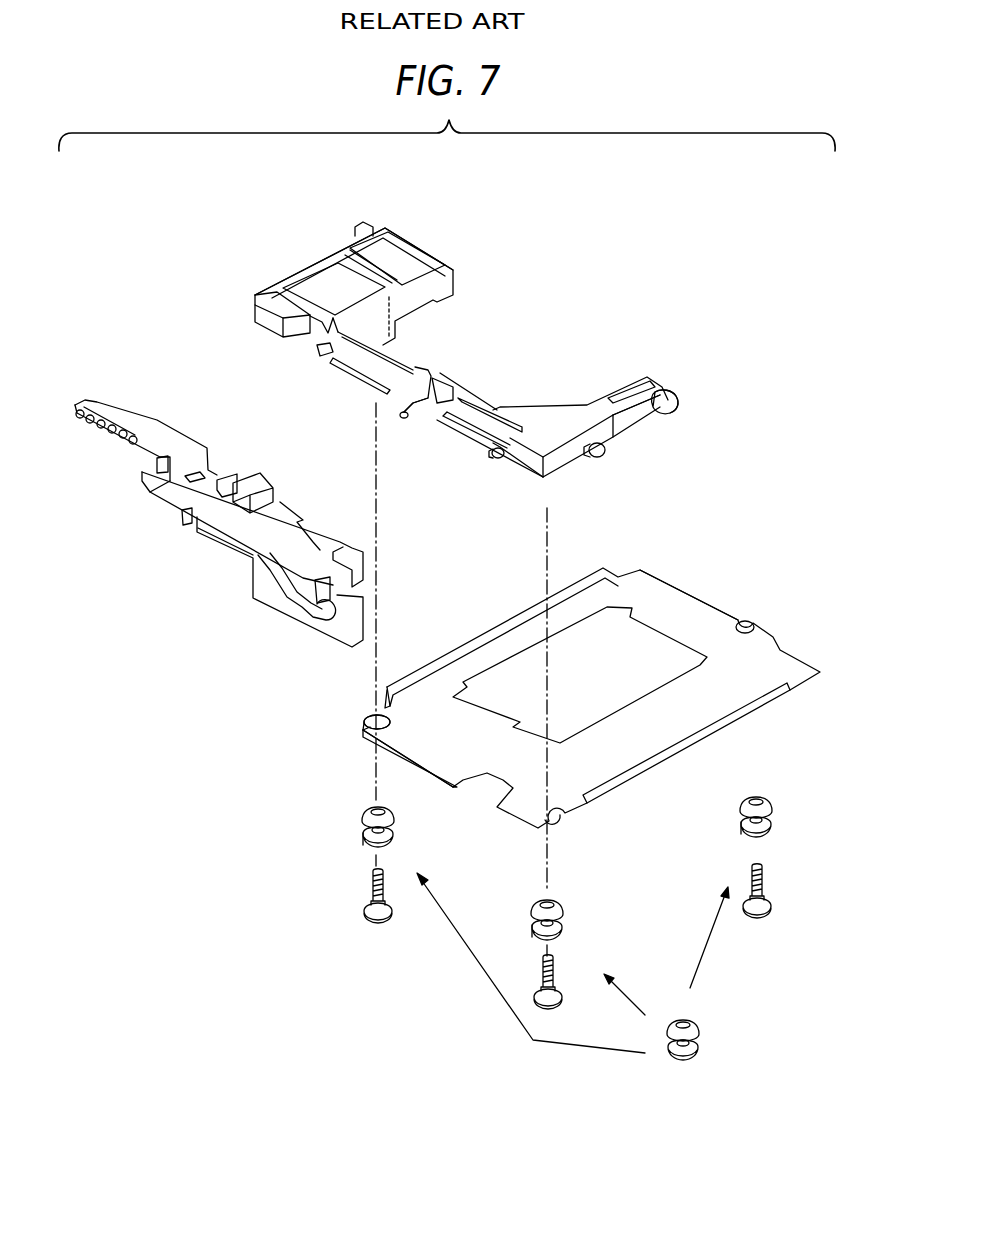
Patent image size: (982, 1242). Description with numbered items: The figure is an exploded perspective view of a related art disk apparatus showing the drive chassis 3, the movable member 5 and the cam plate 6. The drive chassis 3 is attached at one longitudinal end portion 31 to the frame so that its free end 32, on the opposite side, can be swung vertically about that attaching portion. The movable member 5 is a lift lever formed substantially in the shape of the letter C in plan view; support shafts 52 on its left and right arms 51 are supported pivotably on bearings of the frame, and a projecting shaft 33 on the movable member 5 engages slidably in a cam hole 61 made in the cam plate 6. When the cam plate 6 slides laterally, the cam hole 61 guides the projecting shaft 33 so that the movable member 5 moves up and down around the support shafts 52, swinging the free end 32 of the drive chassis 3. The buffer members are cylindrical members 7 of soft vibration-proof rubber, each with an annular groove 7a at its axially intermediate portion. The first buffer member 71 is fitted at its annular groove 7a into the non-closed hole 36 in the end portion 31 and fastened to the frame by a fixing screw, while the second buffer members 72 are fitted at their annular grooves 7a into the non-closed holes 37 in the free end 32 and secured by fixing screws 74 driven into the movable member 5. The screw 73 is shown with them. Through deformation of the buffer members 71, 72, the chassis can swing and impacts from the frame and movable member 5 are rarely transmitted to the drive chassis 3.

The drive chassis 3 is at (807, 688).
The longitudinal end portion 31 is at (685, 590).
The free end 32 is at (443, 782).
The projecting shaft 33 is at (423, 407).
The non-closed hole 36 is at (747, 619).
The non-closed holes 37 is at (368, 718).
The movable member 5 is at (525, 463).
The arms 51 is at (338, 245).
The support shafts 52 is at (368, 223).
The cam plate 6 is at (273, 597).
The cam hole 61 is at (317, 603).
The cylindrical members 7 is at (708, 1028).
The annular groove 7a is at (363, 839).
The first buffer member 71 is at (773, 803).
The second buffer members 72 is at (362, 810).
The screw 73 is at (770, 876).
The fixing screws 74 is at (370, 881).